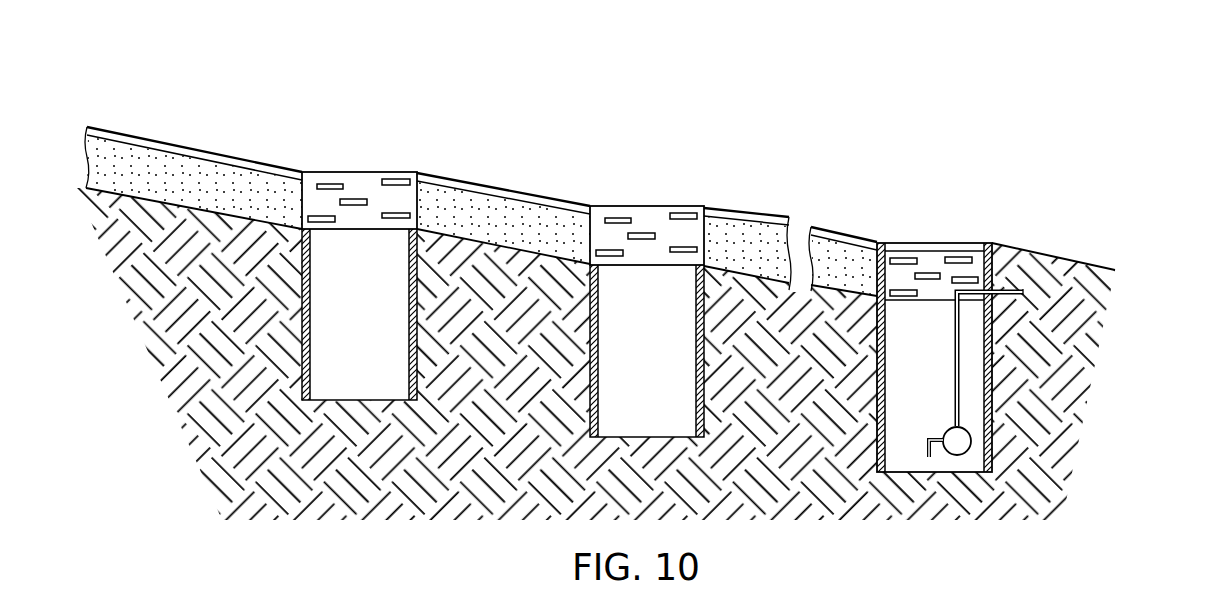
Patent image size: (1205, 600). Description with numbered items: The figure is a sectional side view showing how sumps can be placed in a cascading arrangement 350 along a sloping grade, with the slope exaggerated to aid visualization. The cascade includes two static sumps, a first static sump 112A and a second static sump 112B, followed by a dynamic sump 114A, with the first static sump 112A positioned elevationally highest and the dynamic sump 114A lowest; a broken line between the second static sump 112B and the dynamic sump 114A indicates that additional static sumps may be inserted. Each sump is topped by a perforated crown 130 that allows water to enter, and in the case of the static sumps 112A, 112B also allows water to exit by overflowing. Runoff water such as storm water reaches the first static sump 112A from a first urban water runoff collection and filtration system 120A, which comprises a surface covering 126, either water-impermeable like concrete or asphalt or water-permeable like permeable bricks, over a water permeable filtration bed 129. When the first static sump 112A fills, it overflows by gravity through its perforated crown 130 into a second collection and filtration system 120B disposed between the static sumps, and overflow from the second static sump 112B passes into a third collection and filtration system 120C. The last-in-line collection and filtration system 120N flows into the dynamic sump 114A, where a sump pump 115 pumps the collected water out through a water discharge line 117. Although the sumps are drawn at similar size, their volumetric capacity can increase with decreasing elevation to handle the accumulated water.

The cascading arrangement 350 is at (608, 303).
The first urban water runoff collection and filtration system 120A is at (157, 130).
The second urban water runoff collection and filtration system 120B is at (486, 172).
The third urban water runoff collection and filtration system 120C is at (723, 199).
The last-in-line urban water runoff collection and filtration system 120N is at (843, 230).
The surface covering 126 is at (238, 155).
The water permeable filtration bed 129 is at (192, 178).
The perforated crown 130 is at (301, 200).
The first static sump 112A is at (350, 160).
The second static sump 112B is at (633, 199).
The dynamic sump 114A is at (1017, 328).
The water discharge line 117 is at (1008, 300).
The sump pump 115 is at (973, 444).